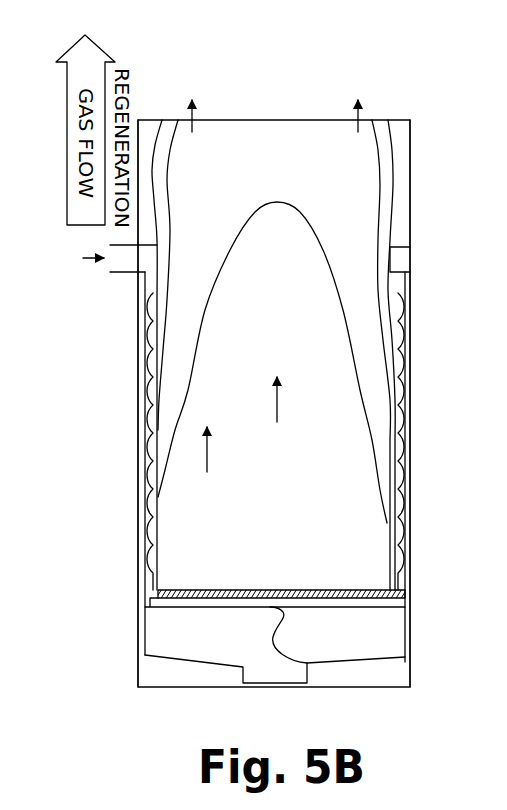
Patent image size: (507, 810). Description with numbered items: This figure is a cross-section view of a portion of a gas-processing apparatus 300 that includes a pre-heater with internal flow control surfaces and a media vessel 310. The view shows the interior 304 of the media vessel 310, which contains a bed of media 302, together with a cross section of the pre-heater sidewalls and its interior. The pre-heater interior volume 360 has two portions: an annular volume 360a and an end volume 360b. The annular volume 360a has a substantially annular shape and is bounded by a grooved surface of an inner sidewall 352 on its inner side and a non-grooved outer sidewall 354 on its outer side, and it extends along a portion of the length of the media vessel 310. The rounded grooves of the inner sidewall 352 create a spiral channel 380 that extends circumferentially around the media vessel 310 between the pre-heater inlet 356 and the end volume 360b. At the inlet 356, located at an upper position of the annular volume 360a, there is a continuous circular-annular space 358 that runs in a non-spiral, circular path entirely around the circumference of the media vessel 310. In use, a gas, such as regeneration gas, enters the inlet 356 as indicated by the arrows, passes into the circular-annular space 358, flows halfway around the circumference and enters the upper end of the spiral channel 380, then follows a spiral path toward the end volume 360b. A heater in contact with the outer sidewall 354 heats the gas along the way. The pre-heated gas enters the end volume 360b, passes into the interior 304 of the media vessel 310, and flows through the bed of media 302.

The gas-processing apparatus 300 is at (442, 278).
The media 302 is at (343, 211).
The interior of media vessel 304 is at (272, 347).
The media vessel 310 is at (378, 207).
The inner sidewall 352 is at (410, 491).
The outer sidewall 354 is at (138, 539).
The pre-heater inlet 356 is at (122, 273).
The circular-annular space 358 is at (403, 253).
The pre-heater interior volume 360 is at (377, 620).
The annular volume 360a is at (145, 382).
The end volume 360b is at (362, 632).
The spiral channel 380 is at (149, 467).